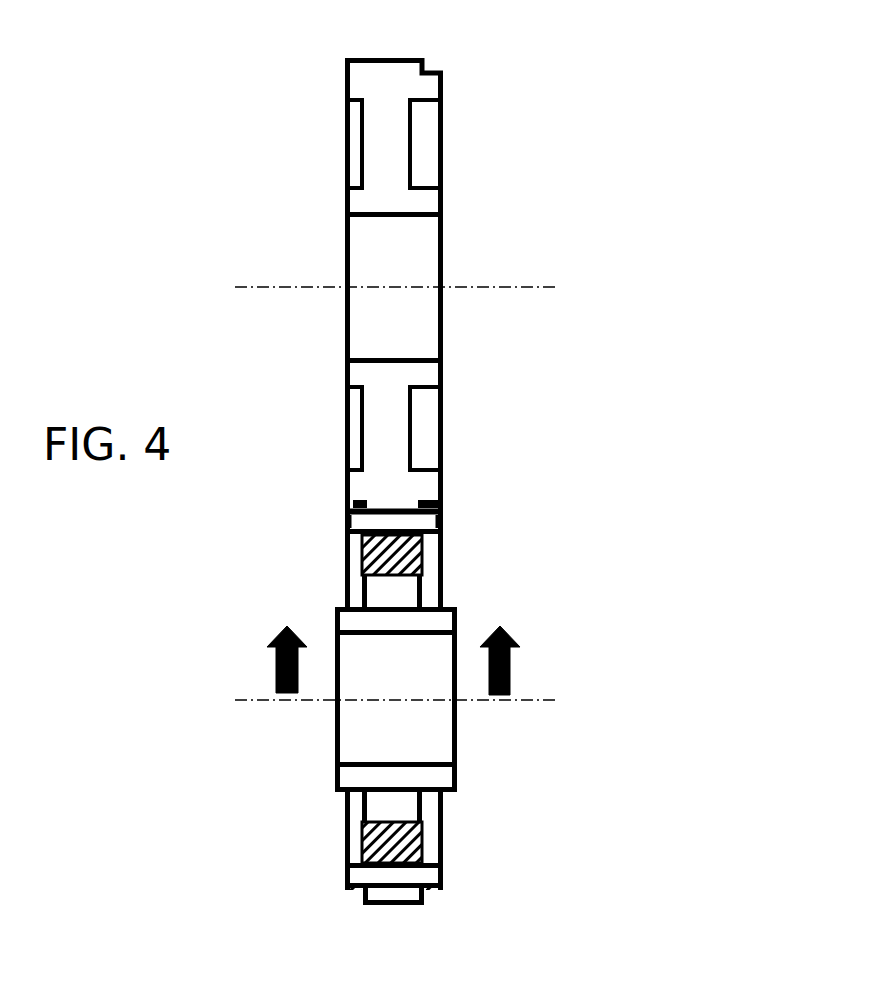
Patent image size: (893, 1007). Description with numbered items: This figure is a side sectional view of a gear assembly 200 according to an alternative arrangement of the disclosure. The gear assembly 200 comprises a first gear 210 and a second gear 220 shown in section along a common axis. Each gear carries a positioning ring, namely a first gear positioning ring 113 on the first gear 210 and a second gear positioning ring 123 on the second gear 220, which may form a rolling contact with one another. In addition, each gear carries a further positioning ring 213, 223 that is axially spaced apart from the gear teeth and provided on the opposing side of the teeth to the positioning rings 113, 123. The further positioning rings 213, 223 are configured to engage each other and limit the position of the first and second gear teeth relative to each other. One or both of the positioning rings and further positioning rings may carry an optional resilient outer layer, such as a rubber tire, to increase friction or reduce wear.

The gear assembly 200 is at (640, 466).
The second gear 220 is at (433, 199).
The first gear 210 is at (440, 775).
The further positioning ring 223 is at (351, 500).
The second gear positioning ring 123 is at (438, 498).
The further positioning ring 213 is at (350, 545).
The first gear positioning ring 113 is at (438, 530).